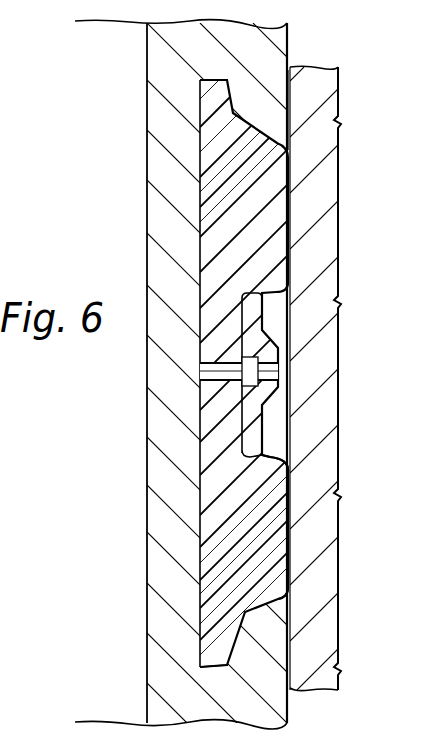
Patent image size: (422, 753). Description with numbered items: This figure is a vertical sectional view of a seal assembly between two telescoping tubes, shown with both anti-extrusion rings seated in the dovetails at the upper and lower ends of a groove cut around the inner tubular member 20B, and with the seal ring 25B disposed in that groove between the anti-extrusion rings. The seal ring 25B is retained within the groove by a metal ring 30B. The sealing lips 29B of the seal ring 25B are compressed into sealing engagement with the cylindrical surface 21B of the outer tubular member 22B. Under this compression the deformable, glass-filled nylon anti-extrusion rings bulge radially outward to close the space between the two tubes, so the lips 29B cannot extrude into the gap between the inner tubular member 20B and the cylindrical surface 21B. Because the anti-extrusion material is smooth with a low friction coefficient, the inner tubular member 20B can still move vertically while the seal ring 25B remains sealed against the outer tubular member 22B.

The inner tubular member 20B is at (294, 91).
The cylindrical surface 21B is at (288, 657).
The outer tubular member 22B is at (340, 165).
The seal ring 25B is at (295, 258).
The sealing lips 29B is at (292, 476).
The ring 30B is at (278, 348).